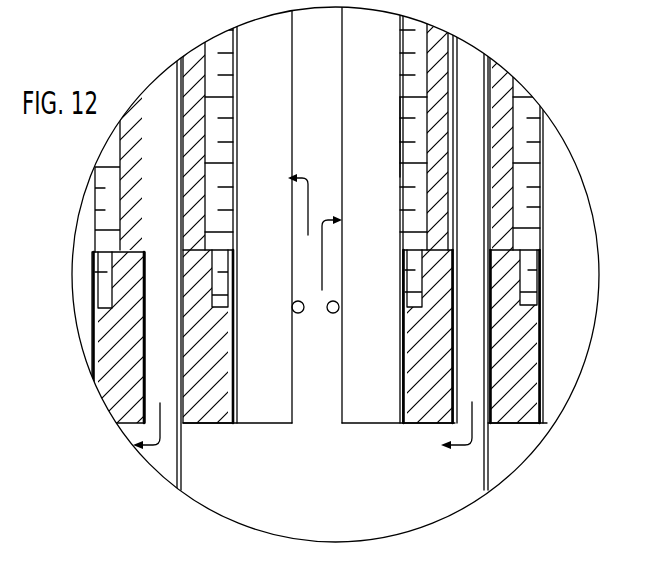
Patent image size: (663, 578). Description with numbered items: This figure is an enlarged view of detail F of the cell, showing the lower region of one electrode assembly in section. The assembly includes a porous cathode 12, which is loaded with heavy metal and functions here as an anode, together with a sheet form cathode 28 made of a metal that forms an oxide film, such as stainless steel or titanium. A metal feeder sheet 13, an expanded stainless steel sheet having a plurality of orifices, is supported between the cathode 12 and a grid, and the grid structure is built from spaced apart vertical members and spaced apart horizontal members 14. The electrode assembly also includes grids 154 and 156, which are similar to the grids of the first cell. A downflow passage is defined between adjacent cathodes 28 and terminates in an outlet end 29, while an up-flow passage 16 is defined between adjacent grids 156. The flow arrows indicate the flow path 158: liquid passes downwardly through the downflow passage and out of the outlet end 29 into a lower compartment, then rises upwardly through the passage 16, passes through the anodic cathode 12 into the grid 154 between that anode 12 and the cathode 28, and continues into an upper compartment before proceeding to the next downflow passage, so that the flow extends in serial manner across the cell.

The porous cathode 12 is at (403, 97).
The metal feeder sheet 13 is at (403, 177).
The horizontal members 14 is at (292, 307).
The up-flow passage 16 is at (320, 425).
The sheet form cathode 28 is at (488, 478).
The outlet end 29 is at (490, 412).
The grid 154 is at (200, 56).
The grid 156 is at (262, 427).
The flow path 158 is at (473, 442).
The detail F is at (72, 272).